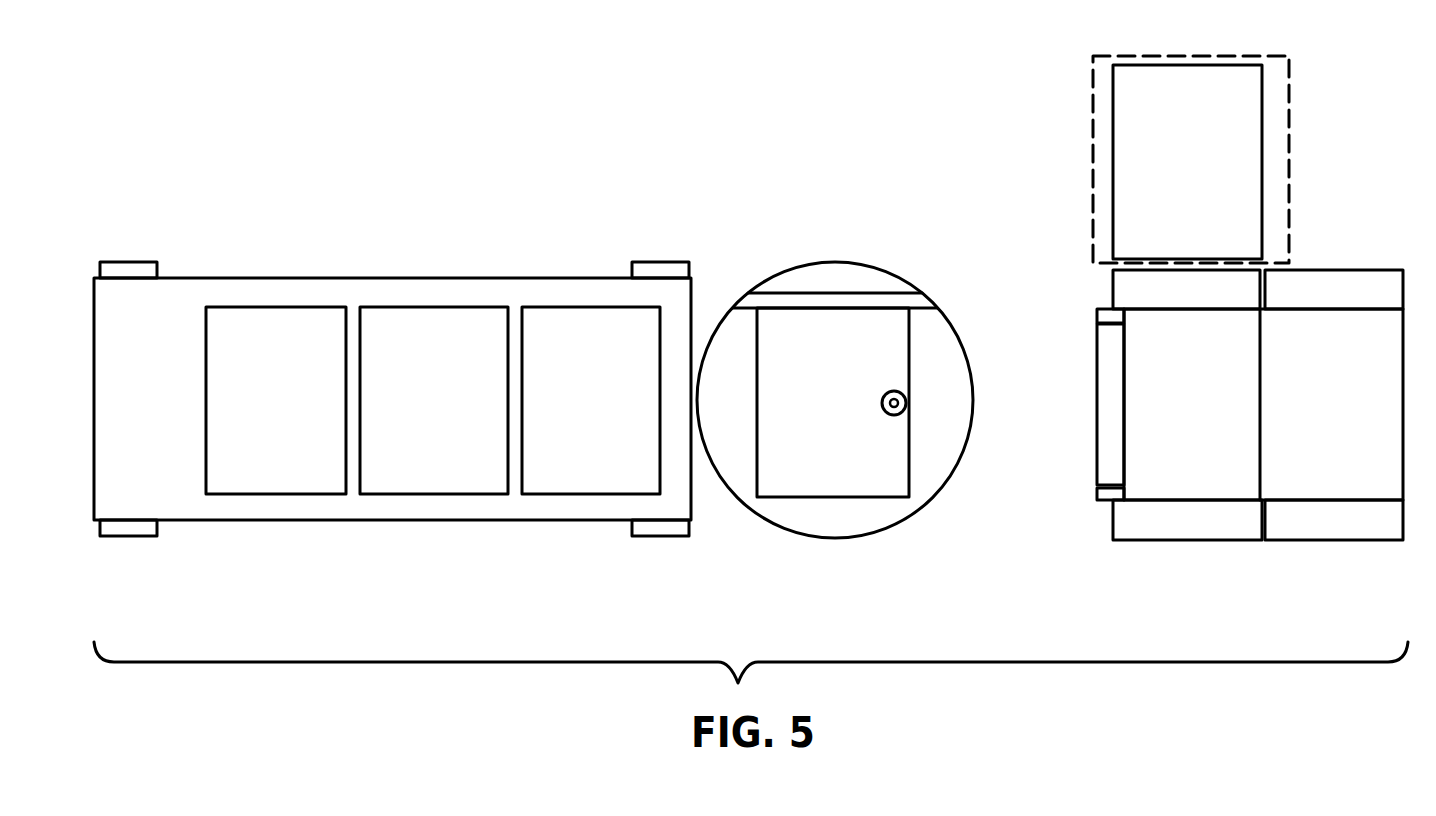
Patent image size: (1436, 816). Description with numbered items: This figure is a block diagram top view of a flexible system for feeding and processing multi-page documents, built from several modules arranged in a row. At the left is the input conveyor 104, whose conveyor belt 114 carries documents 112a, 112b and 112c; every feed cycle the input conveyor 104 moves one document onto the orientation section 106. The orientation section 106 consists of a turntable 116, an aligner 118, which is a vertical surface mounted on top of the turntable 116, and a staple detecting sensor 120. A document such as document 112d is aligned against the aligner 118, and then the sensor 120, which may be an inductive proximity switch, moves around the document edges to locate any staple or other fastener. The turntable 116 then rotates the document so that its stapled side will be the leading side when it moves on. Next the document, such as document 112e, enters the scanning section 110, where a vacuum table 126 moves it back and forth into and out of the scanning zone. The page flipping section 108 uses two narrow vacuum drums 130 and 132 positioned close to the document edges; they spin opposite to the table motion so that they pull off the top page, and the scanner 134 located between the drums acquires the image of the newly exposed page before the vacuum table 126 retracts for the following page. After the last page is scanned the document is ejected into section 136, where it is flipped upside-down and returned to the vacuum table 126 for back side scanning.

The input conveyor 104 is at (395, 552).
The orientation section 106 is at (763, 553).
The page flipping section 108 is at (1118, 563).
The scanning section 110 is at (1063, 363).
The document 112a is at (272, 327).
The document 112b is at (420, 328).
The document 112c is at (567, 327).
The document 112d is at (812, 327).
The document 112e is at (1173, 463).
The conveyor belt 114 is at (514, 512).
The turntable 116 is at (718, 328).
The aligner 118 is at (870, 297).
The staple detecting sensor 120 is at (882, 403).
The vacuum table 126 is at (1332, 482).
The vacuum drum 130 is at (1097, 488).
The vacuum drum 132 is at (1097, 317).
The scanner 134 is at (1095, 446).
The section 136 is at (1097, 113).